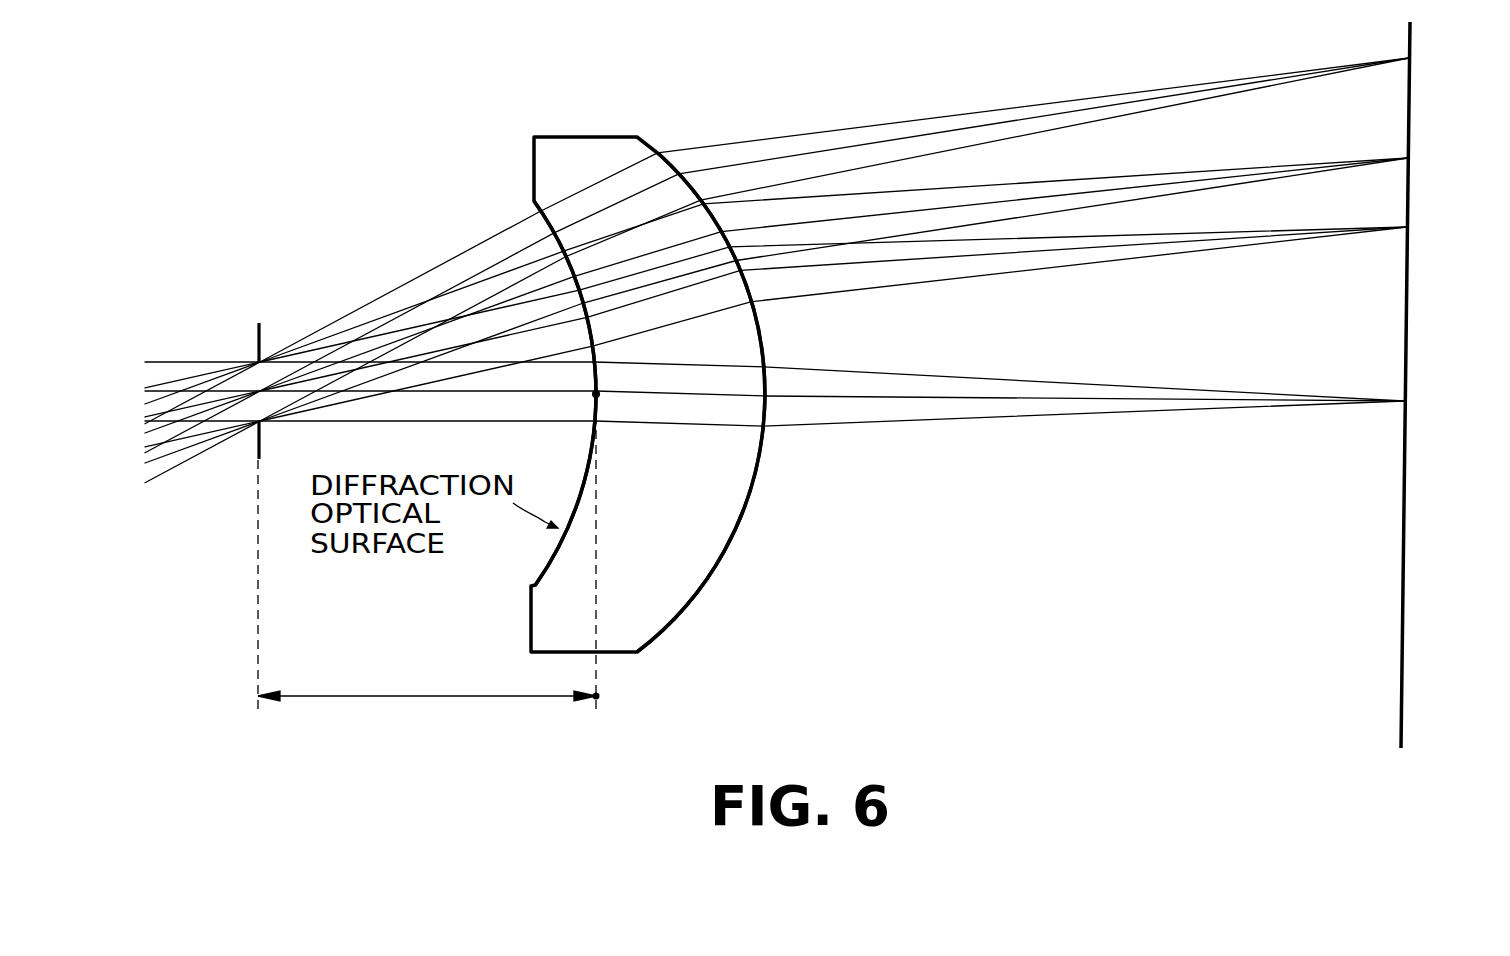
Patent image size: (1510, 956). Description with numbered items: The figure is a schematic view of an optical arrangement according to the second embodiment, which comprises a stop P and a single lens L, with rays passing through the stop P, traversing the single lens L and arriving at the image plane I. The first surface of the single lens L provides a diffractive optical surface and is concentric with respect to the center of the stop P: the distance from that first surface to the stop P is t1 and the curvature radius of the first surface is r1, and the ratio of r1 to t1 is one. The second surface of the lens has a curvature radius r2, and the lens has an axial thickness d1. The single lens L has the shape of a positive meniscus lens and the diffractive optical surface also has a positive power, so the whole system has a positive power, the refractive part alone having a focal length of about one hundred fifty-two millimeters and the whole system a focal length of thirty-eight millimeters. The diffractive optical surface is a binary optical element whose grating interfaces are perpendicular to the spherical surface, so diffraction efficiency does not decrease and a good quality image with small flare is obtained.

The single lens L is at (575, 137).
The stop P is at (263, 337).
The image plane I is at (1404, 584).
The curvature radius of the first surface r1 is at (535, 573).
The second lens surface radius r2 is at (690, 623).
The lens thickness d1 is at (690, 398).
The distance from the first surface to the stop t1 is at (429, 556).